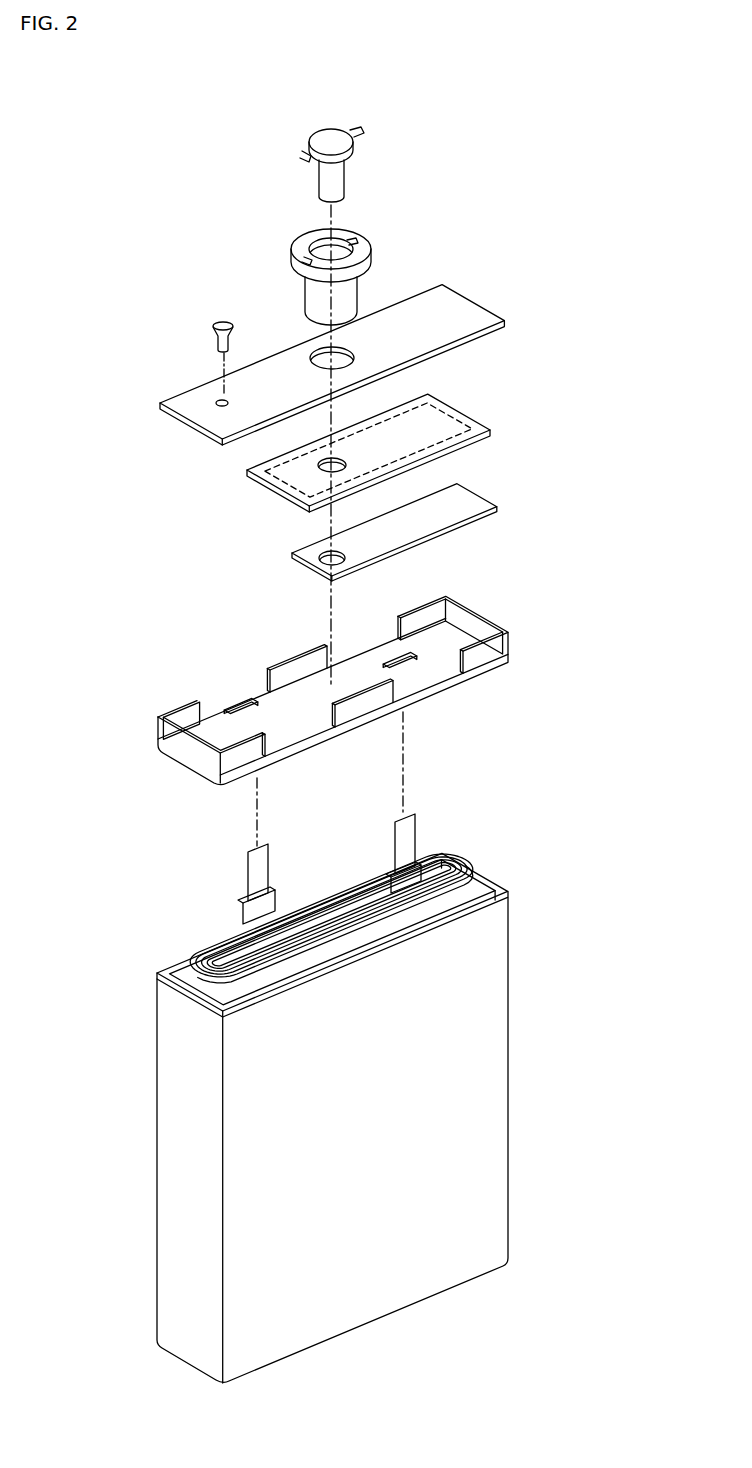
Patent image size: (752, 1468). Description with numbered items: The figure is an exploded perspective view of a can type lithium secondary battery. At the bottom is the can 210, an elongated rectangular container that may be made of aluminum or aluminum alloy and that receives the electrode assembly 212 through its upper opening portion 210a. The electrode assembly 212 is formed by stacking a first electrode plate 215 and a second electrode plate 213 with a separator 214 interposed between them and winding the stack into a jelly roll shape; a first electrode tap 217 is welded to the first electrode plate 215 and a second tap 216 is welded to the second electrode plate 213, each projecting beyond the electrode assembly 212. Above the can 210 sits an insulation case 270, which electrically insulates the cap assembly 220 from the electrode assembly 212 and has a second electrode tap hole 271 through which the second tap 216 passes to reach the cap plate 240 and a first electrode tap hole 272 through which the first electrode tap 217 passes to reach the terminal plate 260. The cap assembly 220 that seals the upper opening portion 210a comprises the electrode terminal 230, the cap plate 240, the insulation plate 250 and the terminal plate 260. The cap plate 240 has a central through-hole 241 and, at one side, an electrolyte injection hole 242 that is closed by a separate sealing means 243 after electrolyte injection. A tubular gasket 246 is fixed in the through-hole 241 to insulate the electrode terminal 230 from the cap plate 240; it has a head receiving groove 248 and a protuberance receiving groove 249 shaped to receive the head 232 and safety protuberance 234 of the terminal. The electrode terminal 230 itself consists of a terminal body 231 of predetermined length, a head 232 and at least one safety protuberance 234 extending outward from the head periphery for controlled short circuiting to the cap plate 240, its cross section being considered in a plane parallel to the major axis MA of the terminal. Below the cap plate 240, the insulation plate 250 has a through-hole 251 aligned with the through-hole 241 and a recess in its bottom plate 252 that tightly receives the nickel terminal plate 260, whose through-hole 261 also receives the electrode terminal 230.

The can 210 is at (487, 1061).
The upper opening portion 210a is at (483, 883).
The electrode assembly 212 is at (453, 765).
The second electrode plate 213 is at (472, 865).
The separator 214 is at (456, 863).
The first electrode plate 215 is at (443, 860).
The second tap 216 is at (258, 880).
The first electrode tap 217 is at (405, 840).
The cap assembly 220 is at (580, 146).
The electrode terminal 230 is at (392, 157).
The terminal body 231 is at (323, 177).
The head 232 is at (322, 132).
The safety protuberance 234 is at (358, 130).
The cap plate 240 is at (455, 303).
The through-hole 241 is at (320, 348).
The electrolyte injection hole 242 is at (218, 401).
The sealing means 243 is at (216, 323).
The gasket 246 is at (280, 253).
The head receiving groove 248 is at (316, 240).
The protuberance receiving groove 249 is at (307, 261).
The insulation plate 250 is at (465, 417).
The through-hole 251 is at (318, 470).
The bottom plate 252 is at (250, 482).
The terminal plate 260 is at (463, 490).
The through-hole 261 is at (313, 562).
The insulation case 270 is at (167, 737).
The second electrode tap hole 271 is at (238, 700).
The first electrode tap hole 272 is at (415, 655).
The major axis MA is at (333, 610).